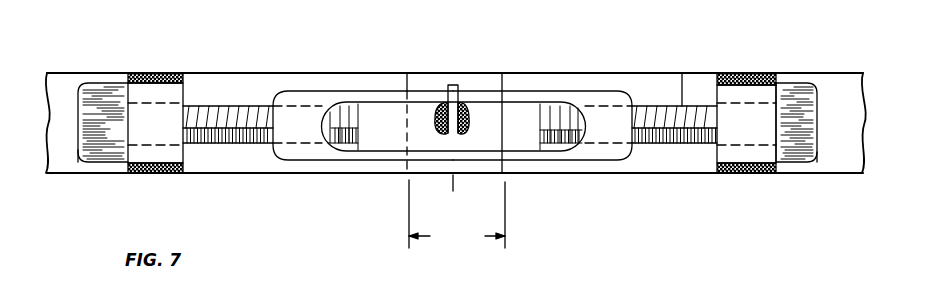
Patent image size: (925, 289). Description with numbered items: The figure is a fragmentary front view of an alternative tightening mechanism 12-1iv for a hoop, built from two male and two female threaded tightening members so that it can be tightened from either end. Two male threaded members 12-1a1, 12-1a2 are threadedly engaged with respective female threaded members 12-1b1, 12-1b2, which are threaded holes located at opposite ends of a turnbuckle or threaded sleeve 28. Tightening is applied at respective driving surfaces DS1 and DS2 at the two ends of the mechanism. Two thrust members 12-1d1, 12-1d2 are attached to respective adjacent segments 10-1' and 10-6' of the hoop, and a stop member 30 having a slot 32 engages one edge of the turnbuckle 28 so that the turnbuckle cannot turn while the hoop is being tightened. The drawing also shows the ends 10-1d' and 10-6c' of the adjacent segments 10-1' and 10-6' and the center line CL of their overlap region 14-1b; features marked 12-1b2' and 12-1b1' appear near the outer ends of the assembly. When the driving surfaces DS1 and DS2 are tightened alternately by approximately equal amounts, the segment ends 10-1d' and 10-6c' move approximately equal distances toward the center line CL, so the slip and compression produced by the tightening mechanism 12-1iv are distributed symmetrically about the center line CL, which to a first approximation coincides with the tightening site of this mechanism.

The tightening mechanism 12-1iv is at (431, 59).
The driving surface DS2 is at (107, 95).
The thrust member 12-1d2 is at (157, 88).
The male threaded member 12-1a2 is at (229, 108).
The female threaded member 12-1b2 is at (358, 156).
The female threaded member 12-1b1 is at (542, 151).
The turnbuckle 28 is at (585, 92).
The stop member 30 is at (437, 112).
The slot 32 is at (456, 92).
The end of segment 10-1d' is at (372, 163).
The end of segment 10-6c' is at (550, 161).
The center line CL is at (451, 197).
The overlap region 14-1b is at (457, 214).
The male threaded member 12-1a1 is at (683, 106).
The thrust member 12-1d1 is at (750, 95).
The driving surface DS1 is at (800, 98).
The left rod end 12-1b2' is at (56, 187).
The segment 10-6' is at (129, 198).
The segment 10-1' is at (712, 193).
The right rod end 12-1b1' is at (851, 183).